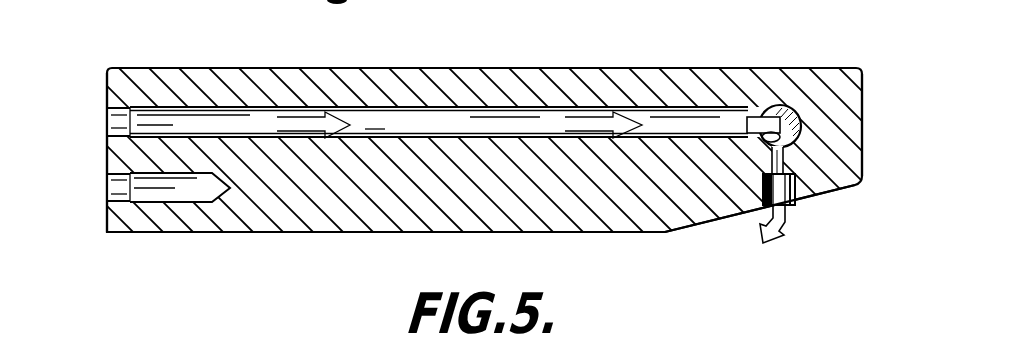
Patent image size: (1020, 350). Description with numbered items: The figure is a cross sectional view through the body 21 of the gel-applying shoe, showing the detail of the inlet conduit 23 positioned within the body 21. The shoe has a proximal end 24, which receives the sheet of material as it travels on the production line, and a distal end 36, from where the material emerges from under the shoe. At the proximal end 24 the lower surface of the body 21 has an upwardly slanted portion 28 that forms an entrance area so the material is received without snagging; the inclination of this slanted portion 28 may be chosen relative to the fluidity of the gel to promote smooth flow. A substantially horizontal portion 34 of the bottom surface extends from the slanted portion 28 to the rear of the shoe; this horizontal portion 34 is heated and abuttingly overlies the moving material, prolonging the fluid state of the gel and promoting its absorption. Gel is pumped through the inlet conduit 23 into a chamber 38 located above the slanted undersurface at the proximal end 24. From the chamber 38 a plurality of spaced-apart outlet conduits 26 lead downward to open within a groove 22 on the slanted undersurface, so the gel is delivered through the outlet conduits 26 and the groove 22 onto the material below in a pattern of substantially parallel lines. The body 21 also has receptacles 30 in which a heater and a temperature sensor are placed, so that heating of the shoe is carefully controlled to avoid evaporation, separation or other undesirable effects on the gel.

The body 21 is at (526, 63).
The groove 22 is at (795, 190).
The inlet conduit 23 is at (107, 125).
The proximal end 24 is at (862, 93).
The outlet conduits 26 is at (780, 163).
The slanted portion 28 is at (715, 222).
The receptacles 30 is at (107, 197).
The horizontal portion 34 is at (300, 232).
The distal end 36 is at (107, 84).
The chamber 38 is at (777, 122).